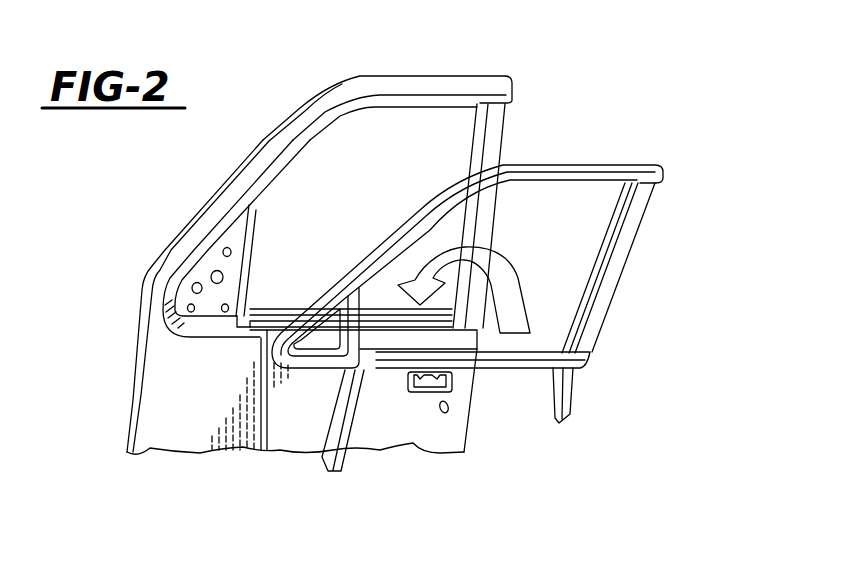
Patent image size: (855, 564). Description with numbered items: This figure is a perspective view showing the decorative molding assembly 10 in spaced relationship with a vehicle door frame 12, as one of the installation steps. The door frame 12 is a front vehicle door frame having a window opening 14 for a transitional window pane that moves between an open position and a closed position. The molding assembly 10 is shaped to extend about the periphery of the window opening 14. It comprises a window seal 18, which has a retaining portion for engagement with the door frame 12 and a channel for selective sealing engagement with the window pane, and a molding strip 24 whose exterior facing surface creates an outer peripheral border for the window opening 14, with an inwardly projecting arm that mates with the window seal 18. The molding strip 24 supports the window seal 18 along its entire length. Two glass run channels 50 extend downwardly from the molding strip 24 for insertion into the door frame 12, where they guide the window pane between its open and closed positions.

The decorative molding assembly 10 is at (518, 297).
The vehicle door frame 12 is at (309, 237).
The window opening 14 is at (413, 107).
The window seal 18 is at (600, 233).
The molding strip 24 is at (642, 238).
The glass run channel 50 is at (342, 412).